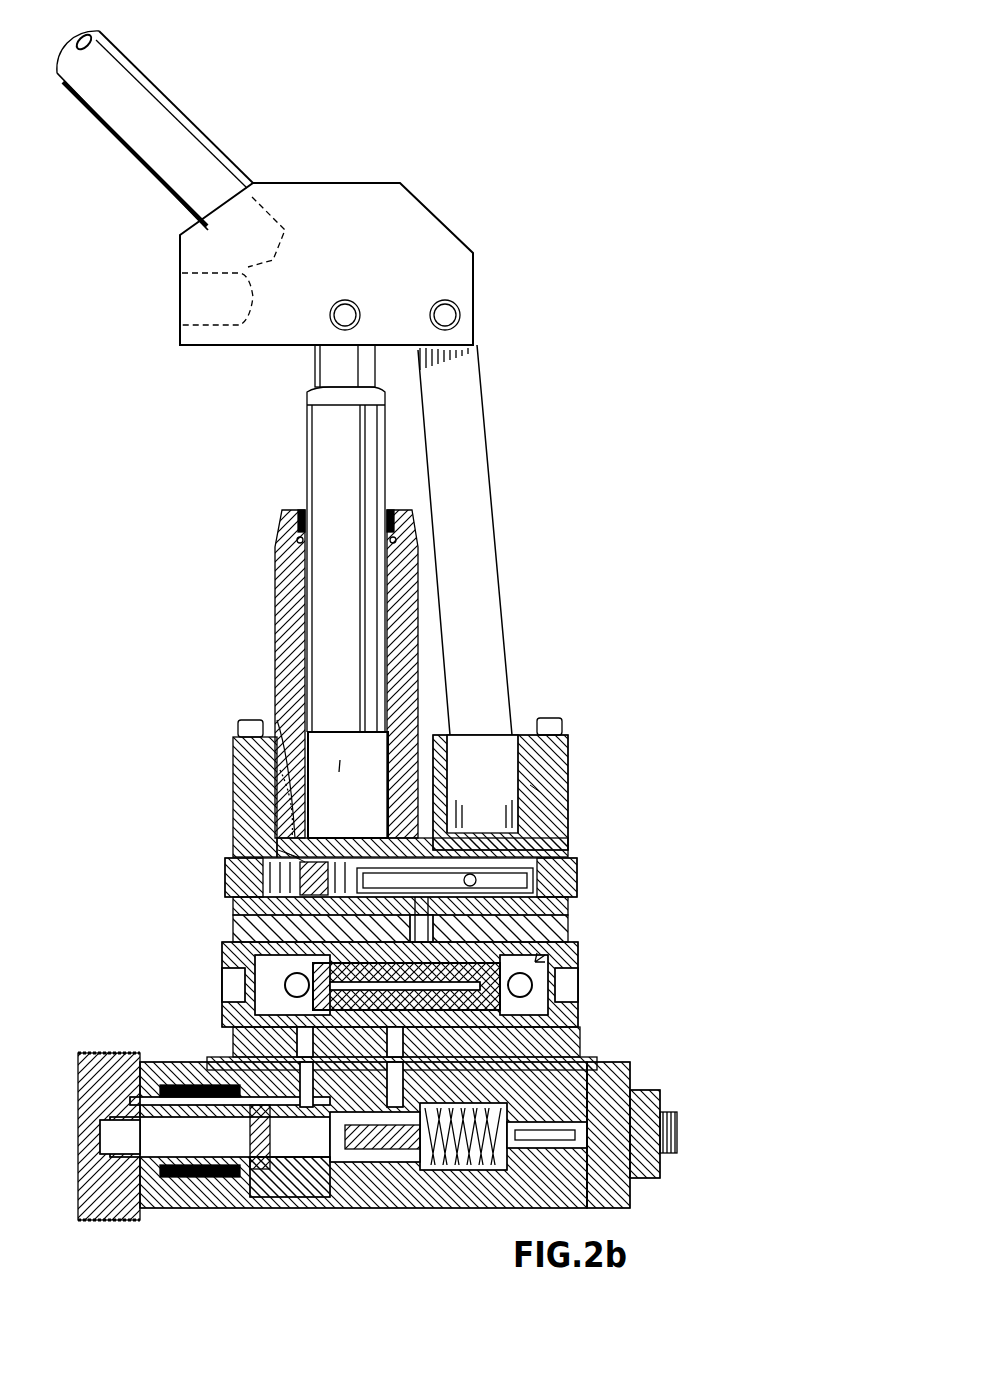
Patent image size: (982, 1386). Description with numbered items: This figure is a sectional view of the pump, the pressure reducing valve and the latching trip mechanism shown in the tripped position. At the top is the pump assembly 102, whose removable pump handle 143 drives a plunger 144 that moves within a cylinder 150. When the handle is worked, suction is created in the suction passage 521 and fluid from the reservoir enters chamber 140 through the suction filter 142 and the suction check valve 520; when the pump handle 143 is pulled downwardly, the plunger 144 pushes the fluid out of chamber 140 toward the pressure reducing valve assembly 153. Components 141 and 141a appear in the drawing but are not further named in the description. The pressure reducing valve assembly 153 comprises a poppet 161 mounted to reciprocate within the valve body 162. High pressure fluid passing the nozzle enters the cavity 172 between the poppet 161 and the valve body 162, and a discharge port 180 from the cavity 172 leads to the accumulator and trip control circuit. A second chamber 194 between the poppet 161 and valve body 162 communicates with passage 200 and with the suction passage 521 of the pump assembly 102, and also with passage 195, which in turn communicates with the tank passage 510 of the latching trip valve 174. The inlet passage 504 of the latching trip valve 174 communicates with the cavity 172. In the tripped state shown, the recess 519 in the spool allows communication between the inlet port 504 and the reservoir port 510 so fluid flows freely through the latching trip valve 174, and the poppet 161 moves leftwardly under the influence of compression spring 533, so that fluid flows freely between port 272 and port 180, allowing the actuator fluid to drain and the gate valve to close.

The pump assembly 102 is at (705, 723).
The pump handle 143 is at (237, 173).
The plunger 144 is at (388, 428).
The chamber 140 is at (340, 763).
The cylinder 150 is at (420, 638).
The suction check valve 520 is at (277, 710).
The left mounting block 141 is at (250, 793).
The block passage 141a is at (293, 847).
The suction filter 142 is at (568, 810).
The suction passage 521 is at (535, 788).
The compression spring 533 is at (630, 853).
The cavity 172 is at (232, 912).
The discharge port 180 is at (233, 928).
The poppet 161 is at (225, 982).
The passage 200 is at (430, 945).
The port 272 is at (510, 980).
The pressure reducing valve assembly 153 is at (655, 910).
The second chamber 194 is at (573, 1037).
The passage 195 is at (560, 1040).
The valve body 162 is at (573, 1050).
The inlet passage 504 is at (228, 1062).
The tank passage 510 is at (372, 1210).
The recess 519 is at (330, 1160).
The latching trip valve 174 is at (641, 1078).